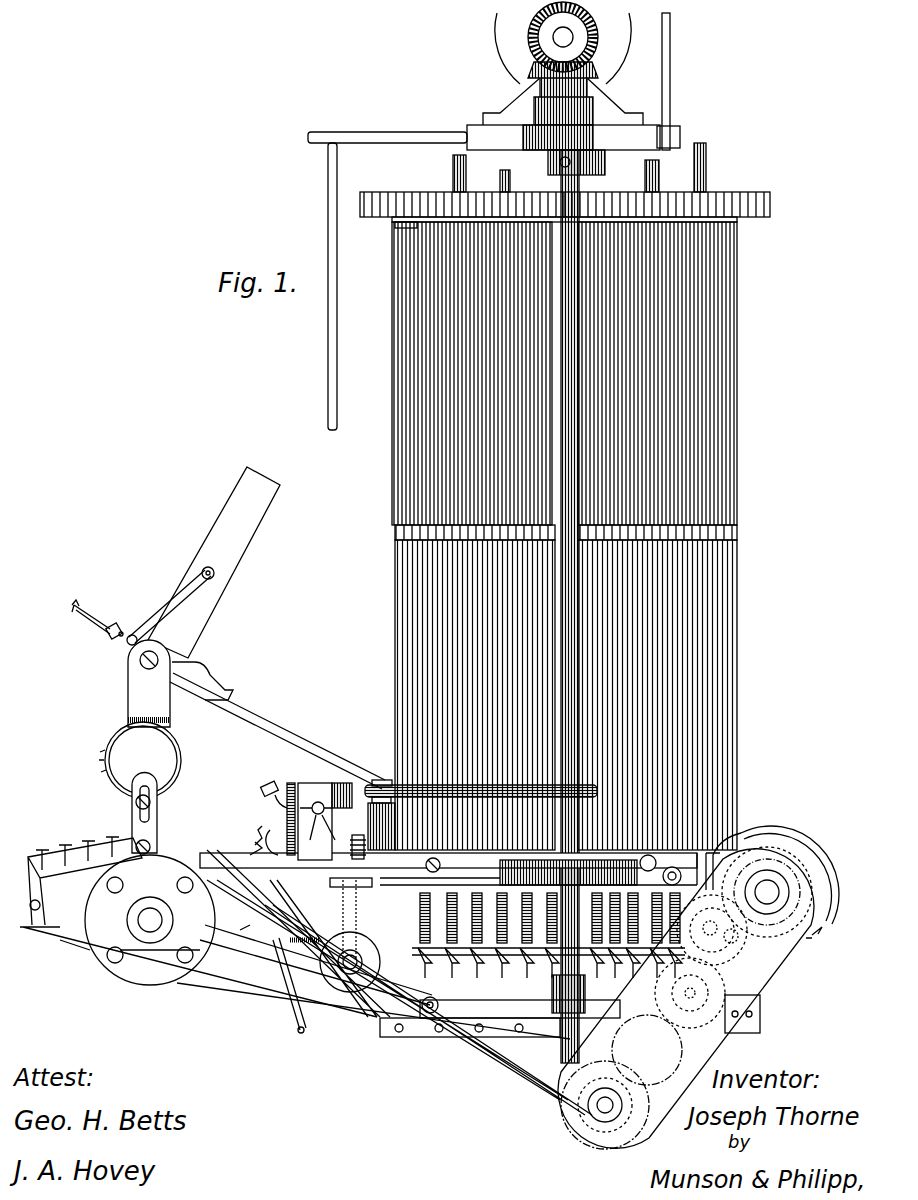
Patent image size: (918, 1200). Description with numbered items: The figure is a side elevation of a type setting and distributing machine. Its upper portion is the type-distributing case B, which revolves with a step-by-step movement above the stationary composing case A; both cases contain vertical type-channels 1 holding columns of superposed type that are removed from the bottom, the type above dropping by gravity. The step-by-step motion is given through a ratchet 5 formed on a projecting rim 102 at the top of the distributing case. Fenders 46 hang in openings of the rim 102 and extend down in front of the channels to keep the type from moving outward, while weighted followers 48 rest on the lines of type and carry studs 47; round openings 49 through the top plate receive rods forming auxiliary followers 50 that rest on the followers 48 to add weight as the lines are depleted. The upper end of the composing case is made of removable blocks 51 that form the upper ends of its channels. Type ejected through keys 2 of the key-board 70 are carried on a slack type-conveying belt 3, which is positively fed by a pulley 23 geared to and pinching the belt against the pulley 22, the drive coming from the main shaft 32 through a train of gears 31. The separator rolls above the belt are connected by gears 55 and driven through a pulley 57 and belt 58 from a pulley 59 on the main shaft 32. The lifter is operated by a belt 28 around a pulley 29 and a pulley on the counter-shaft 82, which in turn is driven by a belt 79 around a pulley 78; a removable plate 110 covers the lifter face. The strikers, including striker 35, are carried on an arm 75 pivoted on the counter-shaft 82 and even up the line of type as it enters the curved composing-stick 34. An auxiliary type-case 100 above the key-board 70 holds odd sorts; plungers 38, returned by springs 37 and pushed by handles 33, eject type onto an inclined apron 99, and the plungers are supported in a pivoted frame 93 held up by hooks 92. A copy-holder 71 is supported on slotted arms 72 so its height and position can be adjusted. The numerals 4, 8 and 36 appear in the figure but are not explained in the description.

The type-channels 1 is at (482, 392).
The keys 2 is at (104, 836).
The type-conveying belt 3 is at (489, 858).
The direction arrow 4 is at (818, 929).
The ratchet 5 is at (483, 192).
The frame bar 8 is at (418, 878).
The pulley 22 is at (780, 880).
The pulley 23 is at (690, 940).
The belt 28 is at (305, 920).
The pulley 29 is at (265, 837).
The train of gears 31 is at (790, 892).
The main shaft 32 is at (580, 185).
The keys or handles 33 is at (73, 614).
The composing-stick 34 is at (291, 783).
The striker 35 is at (347, 845).
The spindle carrier 36 is at (545, 938).
The springs 37 is at (274, 787).
The plungers 38 is at (97, 614).
The fenders 46 is at (405, 338).
The studs 47 is at (527, 415).
The follower 48 is at (522, 365).
The round openings 49 is at (460, 352).
The auxiliary followers 50 is at (453, 174).
The removable plates or blocks 51 is at (746, 530).
The gears 55 is at (368, 801).
The pulley 57 is at (582, 786).
The belt 58 is at (376, 780).
The pulley 59 is at (498, 797).
The key-board 70 is at (198, 927).
The copy-holder 71 is at (140, 760).
The slotted arms 72 is at (157, 812).
The arm 75 is at (360, 905).
The pulley 78 is at (351, 962).
The belt 79 is at (562, 1030).
The counter-shaft 82 is at (378, 970).
The hooks 92 is at (160, 615).
The pivoted frame 93 is at (121, 626).
The apron 99 is at (310, 740).
The auxiliary type-case 100 is at (214, 562).
The projecting rim 102 is at (384, 217).
The removable plate 110 is at (314, 783).
The composing type-case A is at (733, 690).
The distributing type-case B is at (736, 412).